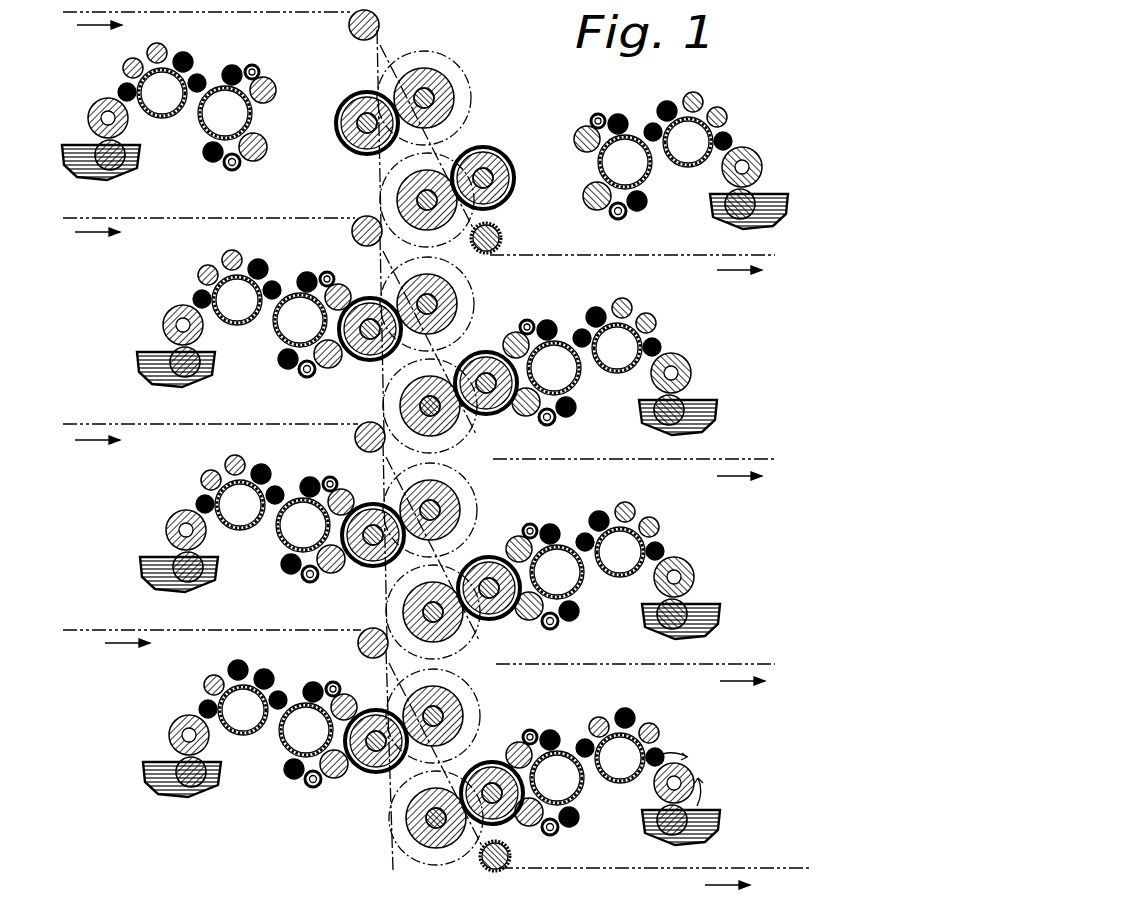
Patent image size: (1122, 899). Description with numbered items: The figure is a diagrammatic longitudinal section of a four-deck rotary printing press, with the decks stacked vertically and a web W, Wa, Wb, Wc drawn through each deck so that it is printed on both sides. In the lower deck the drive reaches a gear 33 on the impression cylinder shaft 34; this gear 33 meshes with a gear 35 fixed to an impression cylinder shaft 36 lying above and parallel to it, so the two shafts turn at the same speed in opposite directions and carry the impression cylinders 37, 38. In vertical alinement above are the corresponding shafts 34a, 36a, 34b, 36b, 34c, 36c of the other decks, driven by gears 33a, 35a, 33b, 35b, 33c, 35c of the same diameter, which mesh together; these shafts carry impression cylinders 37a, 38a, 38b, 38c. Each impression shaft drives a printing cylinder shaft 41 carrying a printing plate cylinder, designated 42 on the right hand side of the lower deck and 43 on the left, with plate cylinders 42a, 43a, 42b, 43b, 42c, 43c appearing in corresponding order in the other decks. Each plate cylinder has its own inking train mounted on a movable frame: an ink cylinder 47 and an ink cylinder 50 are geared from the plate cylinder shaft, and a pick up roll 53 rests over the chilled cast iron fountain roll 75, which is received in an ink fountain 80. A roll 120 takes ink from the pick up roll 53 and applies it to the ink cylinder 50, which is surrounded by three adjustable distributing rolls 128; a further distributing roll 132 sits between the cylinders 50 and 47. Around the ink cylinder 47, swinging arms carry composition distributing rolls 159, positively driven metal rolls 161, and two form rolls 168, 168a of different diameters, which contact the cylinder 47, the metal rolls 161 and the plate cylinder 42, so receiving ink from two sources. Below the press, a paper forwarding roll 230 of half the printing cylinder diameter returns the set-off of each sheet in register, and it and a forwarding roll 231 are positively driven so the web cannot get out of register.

The web W is at (168, 630).
The web Wa is at (155, 424).
The web Wb is at (158, 218).
The web Wc is at (165, 12).
The gear 33 is at (392, 837).
The impression cylinder shaft 34 is at (422, 847).
The gear 35 is at (481, 714).
The impression cylinder shaft 36 is at (445, 714).
The impression cylinder 37 is at (422, 197).
The impression cylinder 38 is at (455, 694).
The printing cylinder shaft 41 is at (357, 708).
The printing plate cylinder 42 is at (492, 763).
The printing plate cylinder 43 is at (364, 770).
The ink cylinder 47 is at (431, 754).
The ink cylinder 50 is at (431, 734).
The pick up roll 53 is at (169, 735).
The fountain roll 75 is at (688, 806).
The ink fountain 80 is at (143, 783).
The roll 120 is at (199, 709).
The distributing roll 128 is at (668, 720).
The distributing roll 132 is at (288, 696).
The composition distributing roll 159 is at (318, 675).
The metal roll 161 is at (345, 684).
The form roll 168 is at (333, 779).
The form roll 168a is at (320, 787).
The paper forwarding roll 230 is at (501, 236).
The forwarding roll 231 is at (366, 40).
The gear 33a is at (386, 608).
The impression cylinder shaft 34a is at (425, 634).
The gear 35a is at (478, 503).
The impression cylinder shaft 36a is at (437, 506).
The impression cylinder 37a is at (424, 610).
The impression cylinder 38a is at (461, 520).
The plate cylinder 42a is at (497, 614).
The plate cylinder 43a is at (372, 505).
The gear 33b is at (383, 405).
The impression cylinder shaft 34b is at (428, 430).
The gear 35b is at (475, 295).
The impression cylinder shaft 36b is at (432, 306).
The impression cylinder 38b is at (450, 290).
The plate cylinder 42b is at (486, 352).
The plate cylinder 43b is at (369, 298).
The gear 33c is at (381, 200).
The impression cylinder shaft 34c is at (426, 214).
The gear 35c is at (471, 98).
The impression cylinder shaft 36c is at (426, 95).
The impression cylinder 38c is at (448, 80).
The plate cylinder 42c is at (489, 150).
The plate cylinder 43c is at (343, 143).